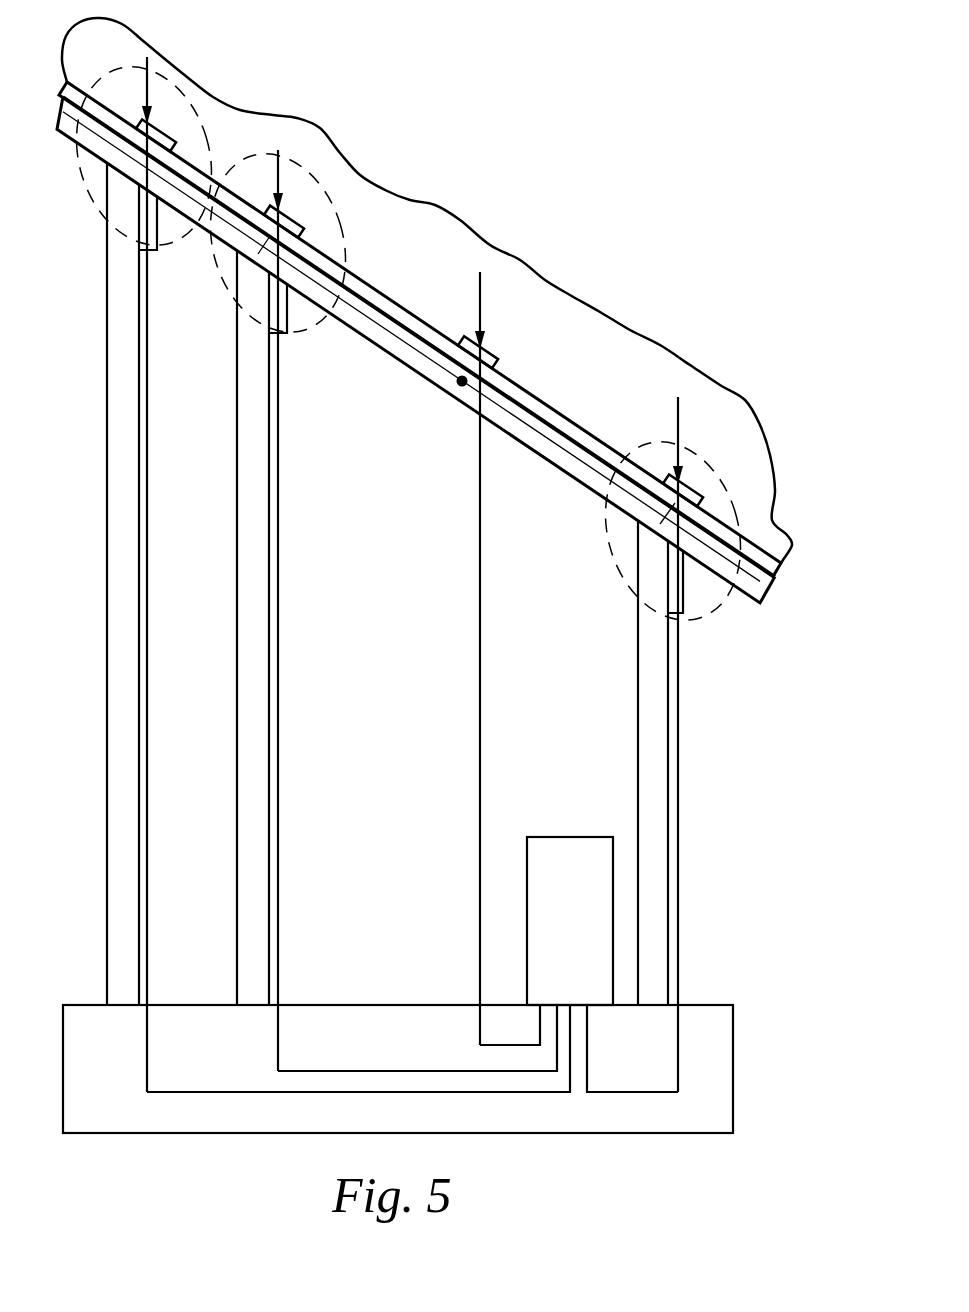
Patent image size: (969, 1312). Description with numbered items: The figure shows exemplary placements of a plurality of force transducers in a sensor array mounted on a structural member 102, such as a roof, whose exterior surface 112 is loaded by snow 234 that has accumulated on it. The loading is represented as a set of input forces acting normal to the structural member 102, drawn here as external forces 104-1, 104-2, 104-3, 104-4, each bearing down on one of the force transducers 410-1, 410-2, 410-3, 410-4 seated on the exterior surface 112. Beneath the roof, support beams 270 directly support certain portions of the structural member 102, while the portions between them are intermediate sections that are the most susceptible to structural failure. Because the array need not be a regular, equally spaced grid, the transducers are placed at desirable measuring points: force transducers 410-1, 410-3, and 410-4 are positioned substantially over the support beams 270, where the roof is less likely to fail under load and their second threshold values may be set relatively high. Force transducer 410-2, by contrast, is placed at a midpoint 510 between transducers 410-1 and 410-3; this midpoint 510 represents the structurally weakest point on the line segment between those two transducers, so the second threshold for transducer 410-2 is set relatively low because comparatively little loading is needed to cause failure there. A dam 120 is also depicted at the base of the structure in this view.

The structural member 102 is at (768, 590).
The exterior surface 112 is at (545, 403).
The snow 234 is at (412, 200).
The midpoint 510 is at (458, 388).
The dam 120 is at (591, 938).
The support beam 270 is at (684, 728).
The external force 104-1 is at (684, 398).
The external force 104-2 is at (483, 280).
The external force 104-3 is at (281, 146).
The external force 104-4 is at (150, 58).
The force transducer 410-1 is at (700, 503).
The force transducer 410-2 is at (460, 342).
The force transducer 410-3 is at (302, 230).
The force transducer 410-4 is at (172, 145).